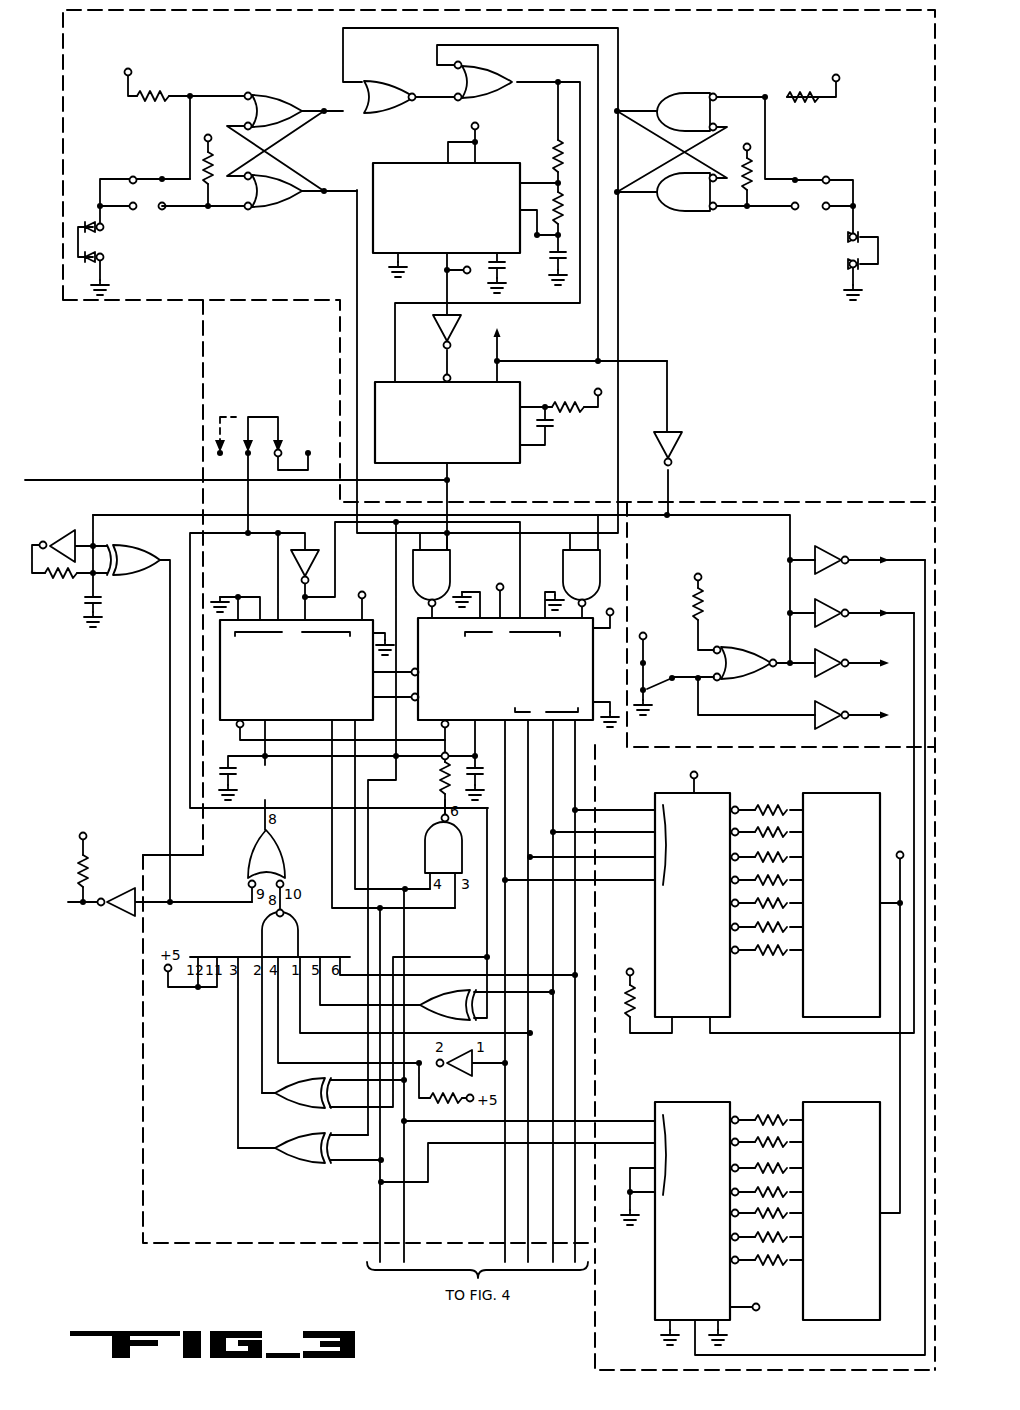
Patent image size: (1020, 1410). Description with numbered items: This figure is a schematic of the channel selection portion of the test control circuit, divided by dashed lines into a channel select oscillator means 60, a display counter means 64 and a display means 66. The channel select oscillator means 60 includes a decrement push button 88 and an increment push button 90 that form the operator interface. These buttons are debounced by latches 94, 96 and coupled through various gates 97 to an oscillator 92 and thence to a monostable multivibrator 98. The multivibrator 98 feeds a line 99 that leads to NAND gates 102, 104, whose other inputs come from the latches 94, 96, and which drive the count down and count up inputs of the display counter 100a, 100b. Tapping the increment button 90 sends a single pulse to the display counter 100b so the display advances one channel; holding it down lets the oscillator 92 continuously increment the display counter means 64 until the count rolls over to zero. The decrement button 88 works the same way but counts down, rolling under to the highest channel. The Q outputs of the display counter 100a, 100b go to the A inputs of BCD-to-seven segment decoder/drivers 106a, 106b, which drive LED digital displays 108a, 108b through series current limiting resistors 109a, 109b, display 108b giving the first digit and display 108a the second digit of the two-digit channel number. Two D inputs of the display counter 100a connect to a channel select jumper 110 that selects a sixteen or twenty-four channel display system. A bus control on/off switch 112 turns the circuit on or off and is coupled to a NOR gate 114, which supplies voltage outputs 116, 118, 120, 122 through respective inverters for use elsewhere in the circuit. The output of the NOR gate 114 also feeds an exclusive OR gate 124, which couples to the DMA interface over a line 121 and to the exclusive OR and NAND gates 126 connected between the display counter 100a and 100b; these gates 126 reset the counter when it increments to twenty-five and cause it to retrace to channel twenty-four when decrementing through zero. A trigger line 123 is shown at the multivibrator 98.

The channel select oscillator means 60 is at (86, 312).
The display counter means 64 is at (196, 388).
The display means 66 is at (762, 752).
The decrement push button 88 is at (814, 164).
The increment push button 90 is at (147, 170).
The oscillator 92 is at (500, 168).
The latch 94 is at (722, 136).
The latch 96 is at (296, 153).
The gates 97 is at (368, 58).
The monostable multivibrator 98 is at (503, 460).
The line 99 is at (68, 478).
The display counter 100a is at (339, 614).
The display counter 100b is at (428, 714).
The NAND gate 102 is at (563, 560).
The NAND gate 104 is at (443, 560).
The BCD-to-seven segment decoder/driver 106a is at (696, 1012).
The BCD-to-seven segment decoder/driver 106b is at (697, 1110).
The LED digital display 108a is at (808, 1007).
The LED digital display 108b is at (834, 1102).
The series current limiting resistors 109a is at (758, 966).
The series current limiting resistors 109b is at (767, 1102).
The channel select jumper 110 is at (272, 414).
The bus control on/off switch 112 is at (650, 680).
The NOR gate 114 is at (742, 642).
The voltage output line 116 is at (862, 550).
The voltage output line 118 is at (862, 603).
The voltage output line 120 is at (862, 655).
The line 121 is at (76, 908).
The voltage output line 122 is at (862, 707).
The trigger line 123 is at (505, 346).
The exclusive OR gate 124 is at (132, 545).
The exclusive OR and NAND gates 126 is at (270, 1064).